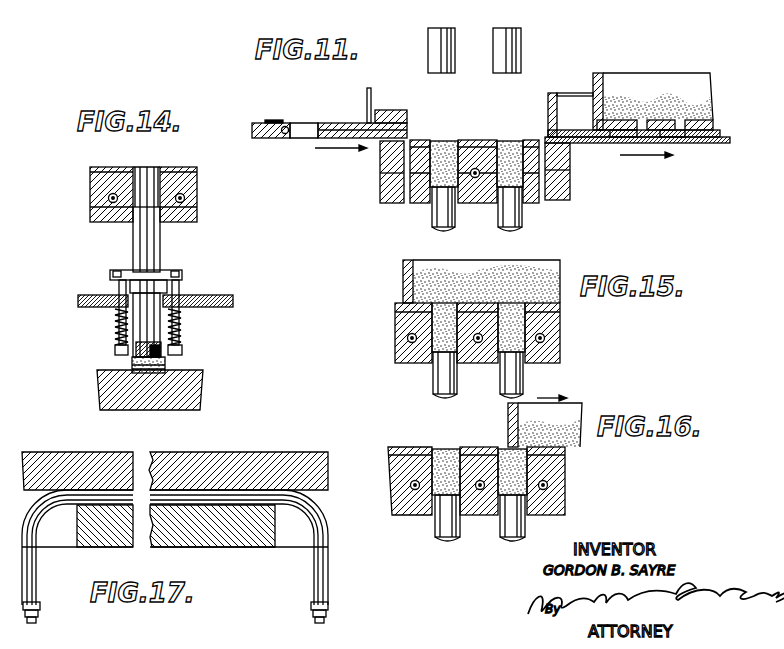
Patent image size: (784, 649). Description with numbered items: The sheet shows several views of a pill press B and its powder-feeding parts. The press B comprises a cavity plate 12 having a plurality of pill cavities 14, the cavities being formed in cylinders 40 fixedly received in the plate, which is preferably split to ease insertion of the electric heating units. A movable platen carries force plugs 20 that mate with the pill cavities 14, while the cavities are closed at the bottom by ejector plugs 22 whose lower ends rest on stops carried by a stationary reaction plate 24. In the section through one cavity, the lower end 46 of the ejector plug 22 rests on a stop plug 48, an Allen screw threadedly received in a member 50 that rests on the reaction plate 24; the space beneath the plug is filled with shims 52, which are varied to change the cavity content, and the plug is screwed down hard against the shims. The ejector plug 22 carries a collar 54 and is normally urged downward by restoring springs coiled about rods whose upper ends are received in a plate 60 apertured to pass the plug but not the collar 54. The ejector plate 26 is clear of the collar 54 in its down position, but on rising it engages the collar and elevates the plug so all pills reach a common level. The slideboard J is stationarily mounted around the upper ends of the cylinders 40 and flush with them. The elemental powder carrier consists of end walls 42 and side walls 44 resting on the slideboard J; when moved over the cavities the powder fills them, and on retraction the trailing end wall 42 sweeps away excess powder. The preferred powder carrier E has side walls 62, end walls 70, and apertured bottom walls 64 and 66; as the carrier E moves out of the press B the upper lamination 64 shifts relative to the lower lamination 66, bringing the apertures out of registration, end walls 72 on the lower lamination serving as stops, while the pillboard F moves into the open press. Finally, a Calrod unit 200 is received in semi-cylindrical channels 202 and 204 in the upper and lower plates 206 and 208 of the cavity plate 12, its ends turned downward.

In FIG. 11, the cavity plate 12 is at (380, 184).
In FIG. 15, the cavity plate 12 is at (395, 345).
In FIG. 17, the cavity plate 12 is at (331, 453).
In FIG. 14, the pill cavities 14 is at (155, 168).
In FIG. 16, the pill cavities 14 is at (430, 458).
In FIG. 11, the force plugs 20 is at (522, 43).
In FIG. 14, the ejector plugs 22 is at (160, 240).
In FIG. 15, the ejector plugs 22 is at (437, 375).
In FIG. 16, the ejector plugs 22 is at (447, 523).
In FIG. 14, the reaction plate 24 is at (200, 397).
In FIG. 14, the ejector plate 26 is at (233, 301).
In FIG. 16, the cylinders 40 is at (432, 512).
In FIG. 15, the end walls 42 is at (403, 278).
In FIG. 16, the end walls 42 is at (518, 403).
In FIG. 15, the side walls 44 is at (521, 272).
In FIG. 16, the side walls 44 is at (567, 417).
In FIG. 14, the lower end of ejector plug 46 is at (133, 336).
In FIG. 14, the stop plug 48 is at (165, 358).
In FIG. 14, the member 50 is at (167, 363).
In FIG. 14, the shims 52 is at (132, 364).
In FIG. 14, the collar 54 is at (172, 283).
In FIG. 14, the plate 60 is at (178, 274).
In FIG. 11, the side wall 62 is at (647, 84).
In FIG. 11, the apertured bottom wall 64 is at (719, 130).
In FIG. 11, the apertured bottom wall 66 is at (729, 140).
In FIG. 11, the end walls 70 is at (597, 73).
In FIG. 11, the end walls 72 is at (553, 93).
In FIG. 17, the Calrod unit 200 is at (227, 492).
In FIG. 17, the semi-cylindrical channel 202 is at (34, 492).
In FIG. 17, the semi-cylindrical channel 204 is at (135, 503).
In FIG. 17, the upper plate 206 is at (318, 478).
In FIG. 17, the lower plate 208 is at (328, 510).
In FIG. 11, the pill press B is at (471, 38).
In FIG. 11, the powder carrier E is at (701, 65).
In FIG. 11, the pillboard F is at (320, 123).
In FIG. 11, the slideboard J is at (727, 144).
In FIG. 14, the slideboard J is at (197, 172).
In FIG. 15, the slideboard J is at (560, 307).
In FIG. 16, the slideboard J is at (566, 451).